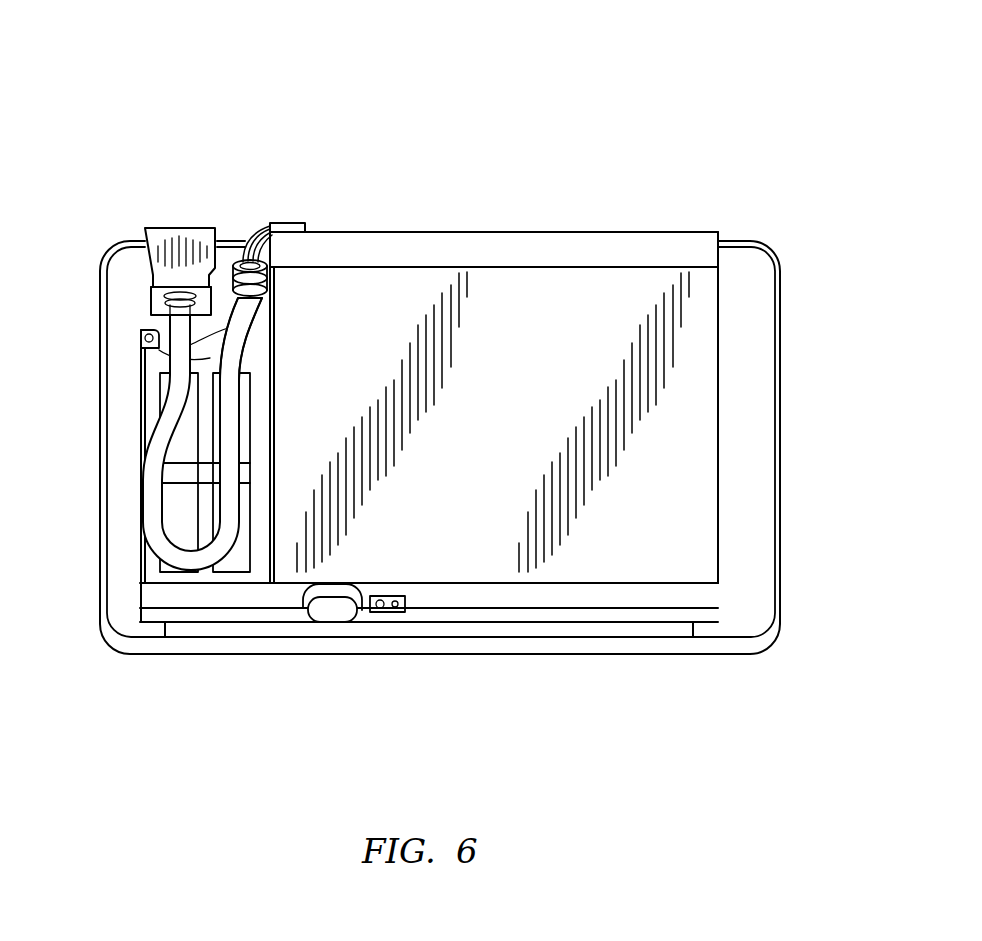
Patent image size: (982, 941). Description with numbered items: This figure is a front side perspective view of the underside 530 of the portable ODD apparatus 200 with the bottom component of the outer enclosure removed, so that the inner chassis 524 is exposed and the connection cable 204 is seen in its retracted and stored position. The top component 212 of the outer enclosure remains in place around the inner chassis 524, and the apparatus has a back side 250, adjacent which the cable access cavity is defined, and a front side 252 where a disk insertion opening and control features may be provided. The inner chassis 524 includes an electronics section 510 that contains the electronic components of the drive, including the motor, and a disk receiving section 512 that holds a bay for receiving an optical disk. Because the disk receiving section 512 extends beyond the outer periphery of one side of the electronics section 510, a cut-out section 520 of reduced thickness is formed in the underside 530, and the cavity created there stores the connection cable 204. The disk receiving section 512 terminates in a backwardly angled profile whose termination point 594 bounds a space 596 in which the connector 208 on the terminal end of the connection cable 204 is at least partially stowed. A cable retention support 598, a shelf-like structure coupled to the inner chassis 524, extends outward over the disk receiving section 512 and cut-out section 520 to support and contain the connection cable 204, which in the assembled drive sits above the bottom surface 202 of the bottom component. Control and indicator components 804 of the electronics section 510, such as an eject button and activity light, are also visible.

The portable ODD apparatus 200 is at (202, 68).
The bottom surface 202 is at (760, 352).
The connection cable 204 is at (170, 365).
The connector 208 is at (165, 226).
The top component 212 is at (780, 557).
The back side 250 is at (333, 231).
The front side 252 is at (180, 570).
The electronics section 510 is at (447, 265).
The disk receiving section 512 is at (157, 600).
The cut-out section 520 is at (190, 445).
The inner chassis 524 is at (718, 455).
The underside 530 is at (582, 298).
The termination point 594 is at (267, 317).
The space 596 is at (223, 287).
The cable retention support 598 is at (137, 550).
The control and indicator components 804 is at (337, 613).